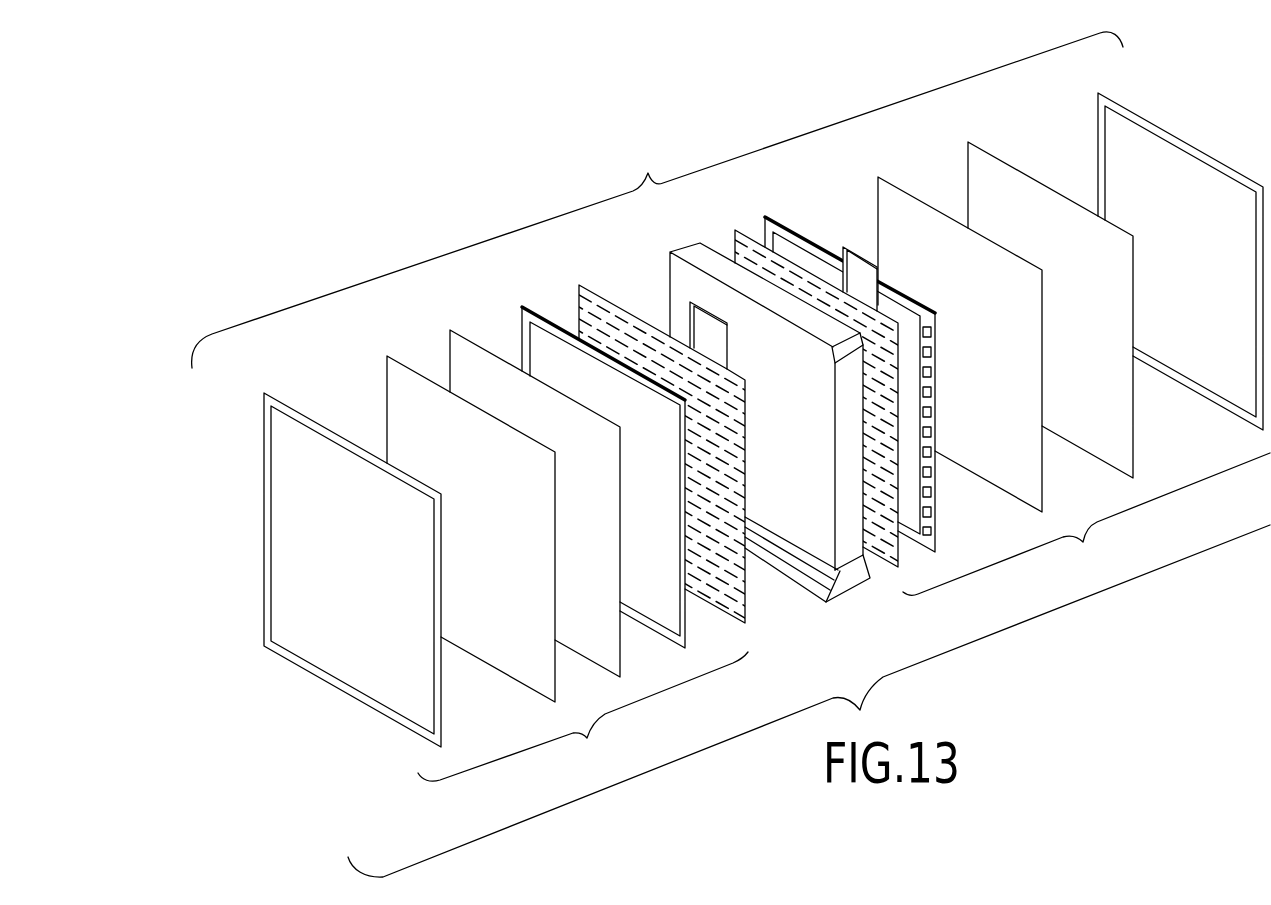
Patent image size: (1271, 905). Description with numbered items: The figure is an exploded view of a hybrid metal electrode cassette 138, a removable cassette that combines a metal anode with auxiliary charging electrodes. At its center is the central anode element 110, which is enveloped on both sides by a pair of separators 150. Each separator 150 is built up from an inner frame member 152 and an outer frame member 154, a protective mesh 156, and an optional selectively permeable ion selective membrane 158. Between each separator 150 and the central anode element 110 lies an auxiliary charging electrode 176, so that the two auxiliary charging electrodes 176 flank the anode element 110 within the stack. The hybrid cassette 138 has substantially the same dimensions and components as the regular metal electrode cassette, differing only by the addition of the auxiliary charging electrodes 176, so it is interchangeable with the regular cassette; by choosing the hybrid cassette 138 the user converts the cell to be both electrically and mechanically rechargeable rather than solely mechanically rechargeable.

The central anode element 110 is at (848, 588).
The hybrid metal electrode cassette 138 is at (657, 200).
The separators 150 is at (844, 617).
The inner frame member 152 is at (527, 307).
The outer frame member 154 is at (287, 398).
The protective mesh 156 is at (400, 353).
The selectively permeable ion selective membrane 158 is at (470, 337).
The auxiliary charging electrode 176 is at (607, 302).